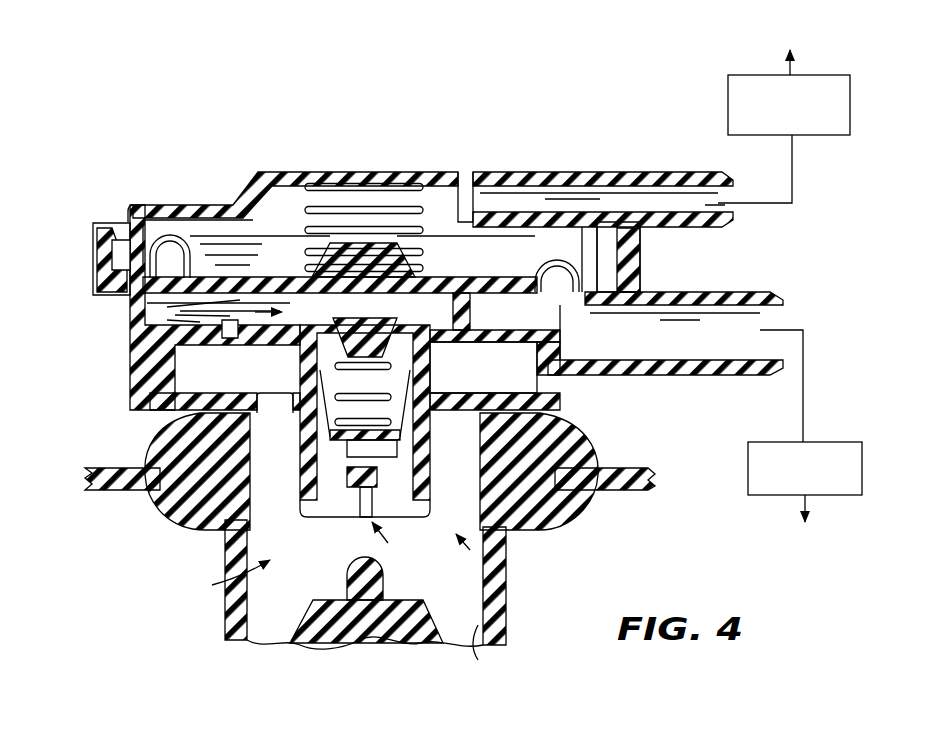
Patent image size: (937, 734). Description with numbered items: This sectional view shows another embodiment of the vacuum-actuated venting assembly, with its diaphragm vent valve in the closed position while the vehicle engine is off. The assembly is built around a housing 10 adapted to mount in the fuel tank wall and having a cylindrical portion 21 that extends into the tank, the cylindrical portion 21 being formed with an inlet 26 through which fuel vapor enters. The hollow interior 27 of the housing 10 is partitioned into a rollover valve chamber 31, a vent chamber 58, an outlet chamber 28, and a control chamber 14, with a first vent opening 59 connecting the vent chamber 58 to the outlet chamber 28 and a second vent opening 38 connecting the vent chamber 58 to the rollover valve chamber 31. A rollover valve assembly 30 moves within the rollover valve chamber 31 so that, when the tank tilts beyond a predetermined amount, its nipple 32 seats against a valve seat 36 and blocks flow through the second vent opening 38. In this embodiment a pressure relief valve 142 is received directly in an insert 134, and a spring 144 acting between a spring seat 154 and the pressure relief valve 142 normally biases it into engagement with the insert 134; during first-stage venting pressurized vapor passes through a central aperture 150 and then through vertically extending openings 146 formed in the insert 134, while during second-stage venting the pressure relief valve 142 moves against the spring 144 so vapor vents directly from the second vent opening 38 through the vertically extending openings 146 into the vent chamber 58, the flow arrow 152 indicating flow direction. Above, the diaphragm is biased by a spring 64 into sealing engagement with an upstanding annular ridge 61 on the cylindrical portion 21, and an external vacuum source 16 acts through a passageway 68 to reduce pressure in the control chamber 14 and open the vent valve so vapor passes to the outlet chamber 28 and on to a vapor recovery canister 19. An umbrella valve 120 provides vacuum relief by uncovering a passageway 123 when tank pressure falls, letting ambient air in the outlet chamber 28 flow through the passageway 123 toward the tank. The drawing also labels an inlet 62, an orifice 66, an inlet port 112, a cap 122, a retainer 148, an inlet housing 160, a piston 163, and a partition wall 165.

The housing 10 is at (170, 522).
The control chamber 14 is at (397, 184).
The external vacuum source 16 is at (728, 85).
The vapor recovery canister 19 is at (748, 450).
The cylindrical portion 21 is at (225, 626).
The inlet 26 is at (503, 593).
The hollow interior 27 is at (486, 649).
The outlet chamber 28 is at (683, 352).
The rollover valve assembly 30 is at (436, 609).
The rollover valve chamber 31 is at (456, 637).
The nipple 32 is at (350, 578).
The valve seat 36 is at (345, 521).
The second vent opening 38 is at (396, 543).
The vent chamber 58 is at (175, 315).
The first vent opening 59 is at (277, 297).
The upstanding annular ridge 61 is at (167, 307).
The inlet 62 is at (107, 266).
The spring 64 is at (367, 210).
The orifice 66 is at (467, 197).
The passageway 68 is at (583, 193).
The inlet port 112 is at (168, 294).
The umbrella valve 120 is at (190, 416).
The cap 122 is at (138, 210).
The passageway 123 is at (167, 320).
The insert 134 is at (297, 437).
The pressure relief valve 142 is at (400, 445).
The spring 144 is at (300, 380).
The vertically extending openings 146 is at (423, 392).
The retainer 148 is at (377, 474).
The central aperture 150 is at (360, 500).
The flow arrow 152 is at (449, 548).
The spring seat 154 is at (380, 320).
The inlet housing 160 is at (132, 224).
The piston 163 is at (353, 250).
The partition wall 165 is at (527, 328).